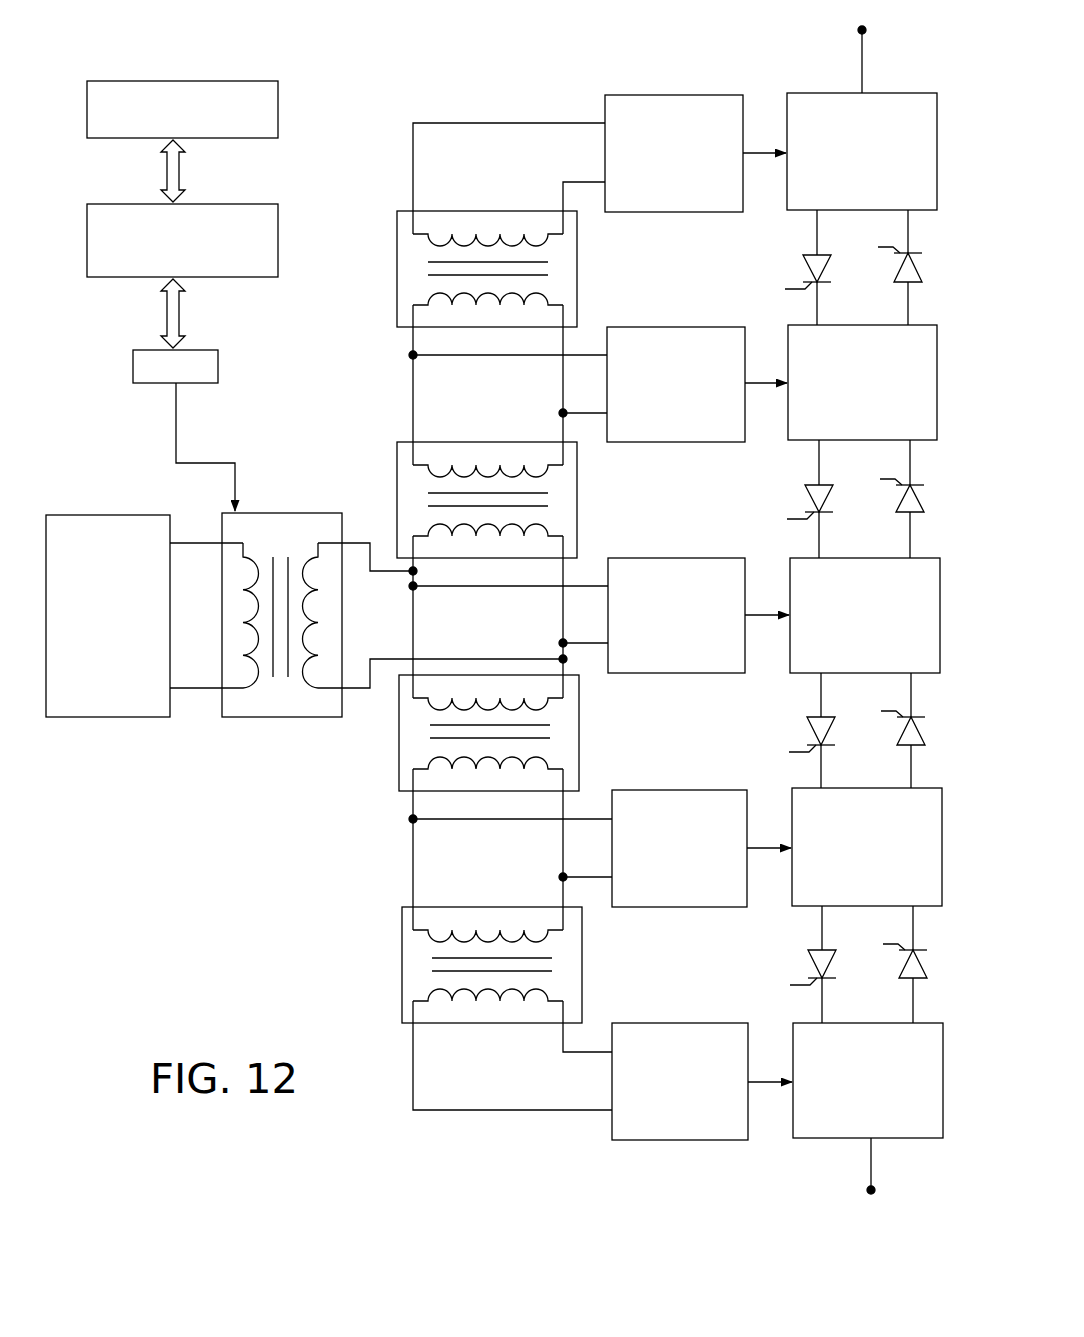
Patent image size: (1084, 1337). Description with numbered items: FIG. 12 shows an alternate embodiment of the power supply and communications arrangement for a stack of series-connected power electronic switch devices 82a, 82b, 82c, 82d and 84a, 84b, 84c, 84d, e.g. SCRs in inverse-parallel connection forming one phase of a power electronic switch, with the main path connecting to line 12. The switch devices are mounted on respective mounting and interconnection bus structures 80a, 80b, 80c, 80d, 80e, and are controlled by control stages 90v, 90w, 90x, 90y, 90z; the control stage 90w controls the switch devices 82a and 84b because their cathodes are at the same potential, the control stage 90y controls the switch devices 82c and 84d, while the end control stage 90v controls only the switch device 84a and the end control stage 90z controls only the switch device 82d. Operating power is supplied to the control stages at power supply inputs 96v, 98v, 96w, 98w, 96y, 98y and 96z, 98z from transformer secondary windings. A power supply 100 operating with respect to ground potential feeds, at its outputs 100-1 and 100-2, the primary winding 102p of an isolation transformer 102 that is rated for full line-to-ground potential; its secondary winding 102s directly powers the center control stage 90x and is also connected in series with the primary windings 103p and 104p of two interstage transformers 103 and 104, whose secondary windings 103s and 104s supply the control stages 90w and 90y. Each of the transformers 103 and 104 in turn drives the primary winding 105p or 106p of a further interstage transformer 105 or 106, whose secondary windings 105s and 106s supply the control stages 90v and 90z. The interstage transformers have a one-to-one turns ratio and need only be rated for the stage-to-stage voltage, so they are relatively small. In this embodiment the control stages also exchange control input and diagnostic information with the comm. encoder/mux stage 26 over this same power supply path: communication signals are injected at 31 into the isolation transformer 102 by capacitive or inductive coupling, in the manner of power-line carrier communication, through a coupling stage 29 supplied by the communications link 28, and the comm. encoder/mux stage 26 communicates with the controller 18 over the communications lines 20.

The line 12 is at (868, 79).
The controller 18 is at (278, 115).
The communications lines 20 is at (180, 174).
The communications encoder/multiplexer stage 26 is at (233, 277).
The communications link 28 is at (165, 303).
The coupling stage 29 is at (131, 372).
The communication signals injection point 31 is at (178, 438).
The power supply 100 is at (102, 512).
The power supply output 100-1 is at (200, 543).
The power supply output 100-2 is at (200, 688).
The isolation transformer 102 is at (261, 511).
The primary winding 102p is at (255, 658).
The secondary winding 102s is at (305, 568).
The interstage transformer 103 is at (394, 461).
The primary winding 103p is at (440, 535).
The secondary winding 103s is at (440, 468).
The interstage transformer 104 is at (397, 736).
The primary winding 104p is at (422, 695).
The secondary winding 104s is at (422, 762).
The interstage transformer 105 is at (394, 233).
The primary winding 105p is at (445, 298).
The secondary winding 105s is at (445, 236).
The interstage transformer 106 is at (399, 912).
The primary winding 106p is at (432, 916).
The secondary winding 106s is at (432, 964).
The mounting and interconnection bus structure 80a is at (862, 151).
The mounting and interconnection bus structure 80b is at (862, 382).
The mounting and interconnection bus structure 80c is at (865, 615).
The mounting and interconnection bus structure 80d is at (867, 847).
The mounting and interconnection bus structure 80e is at (868, 1108).
The power electronic switch device 82a is at (805, 264).
The power electronic switch device 82b is at (810, 499).
The power electronic switch device 82c is at (812, 733).
The power electronic switch device 82d is at (815, 960).
The power electronic switch device 84a is at (897, 265).
The power electronic switch device 84b is at (897, 500).
The power electronic switch device 84c is at (900, 731).
The power electronic switch device 84d is at (900, 962).
The control stage 90v is at (701, 95).
The control stage 90w is at (698, 327).
The center control stage 90x is at (700, 558).
The control stage 90y is at (707, 790).
The end control stage 90z is at (712, 1023).
The power supply input 96v is at (562, 123).
The power supply input 96w is at (575, 357).
The power supply input 96y is at (520, 820).
The power supply input 96z is at (563, 1035).
The power supply input 98v is at (585, 182).
The power supply input 98w is at (590, 414).
The power supply input 98y is at (590, 877).
The power supply input 98z is at (590, 1110).